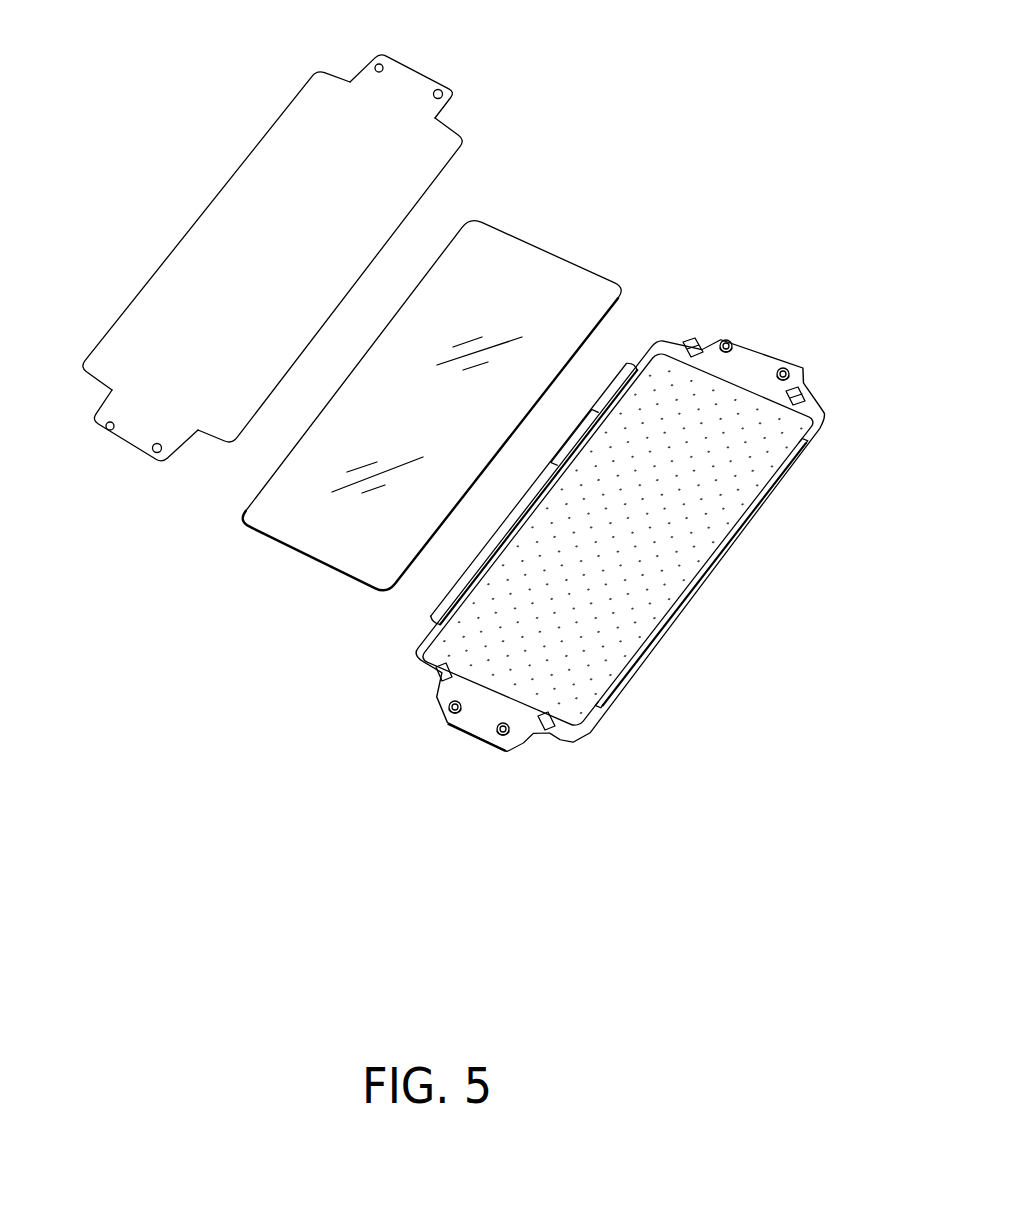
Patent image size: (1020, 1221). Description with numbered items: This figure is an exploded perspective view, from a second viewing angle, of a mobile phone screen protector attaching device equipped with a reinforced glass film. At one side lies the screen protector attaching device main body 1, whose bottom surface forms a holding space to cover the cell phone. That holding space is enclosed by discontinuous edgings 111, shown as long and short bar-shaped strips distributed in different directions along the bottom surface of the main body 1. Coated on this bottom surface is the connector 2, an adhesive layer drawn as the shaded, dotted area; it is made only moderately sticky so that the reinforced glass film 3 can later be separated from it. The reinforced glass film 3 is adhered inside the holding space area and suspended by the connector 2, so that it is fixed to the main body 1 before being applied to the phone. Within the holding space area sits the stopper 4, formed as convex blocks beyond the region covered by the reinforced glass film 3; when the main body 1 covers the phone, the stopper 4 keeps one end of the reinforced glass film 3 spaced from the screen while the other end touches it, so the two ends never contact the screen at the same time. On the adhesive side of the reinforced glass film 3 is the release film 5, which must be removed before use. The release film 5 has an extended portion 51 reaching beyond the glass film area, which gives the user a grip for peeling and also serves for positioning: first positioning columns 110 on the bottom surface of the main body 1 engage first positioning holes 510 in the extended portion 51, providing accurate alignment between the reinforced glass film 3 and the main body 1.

The screen protector attaching device main body 1 is at (633, 517).
The connector 2 is at (621, 538).
The reinforced glass film 3 is at (517, 258).
The stopper 4 is at (633, 370).
The release film 5 is at (273, 162).
The extended portion 51 is at (407, 78).
The first positioning holes 510 is at (378, 63).
The first positioning columns 110 is at (726, 340).
The edgings 111 is at (777, 483).